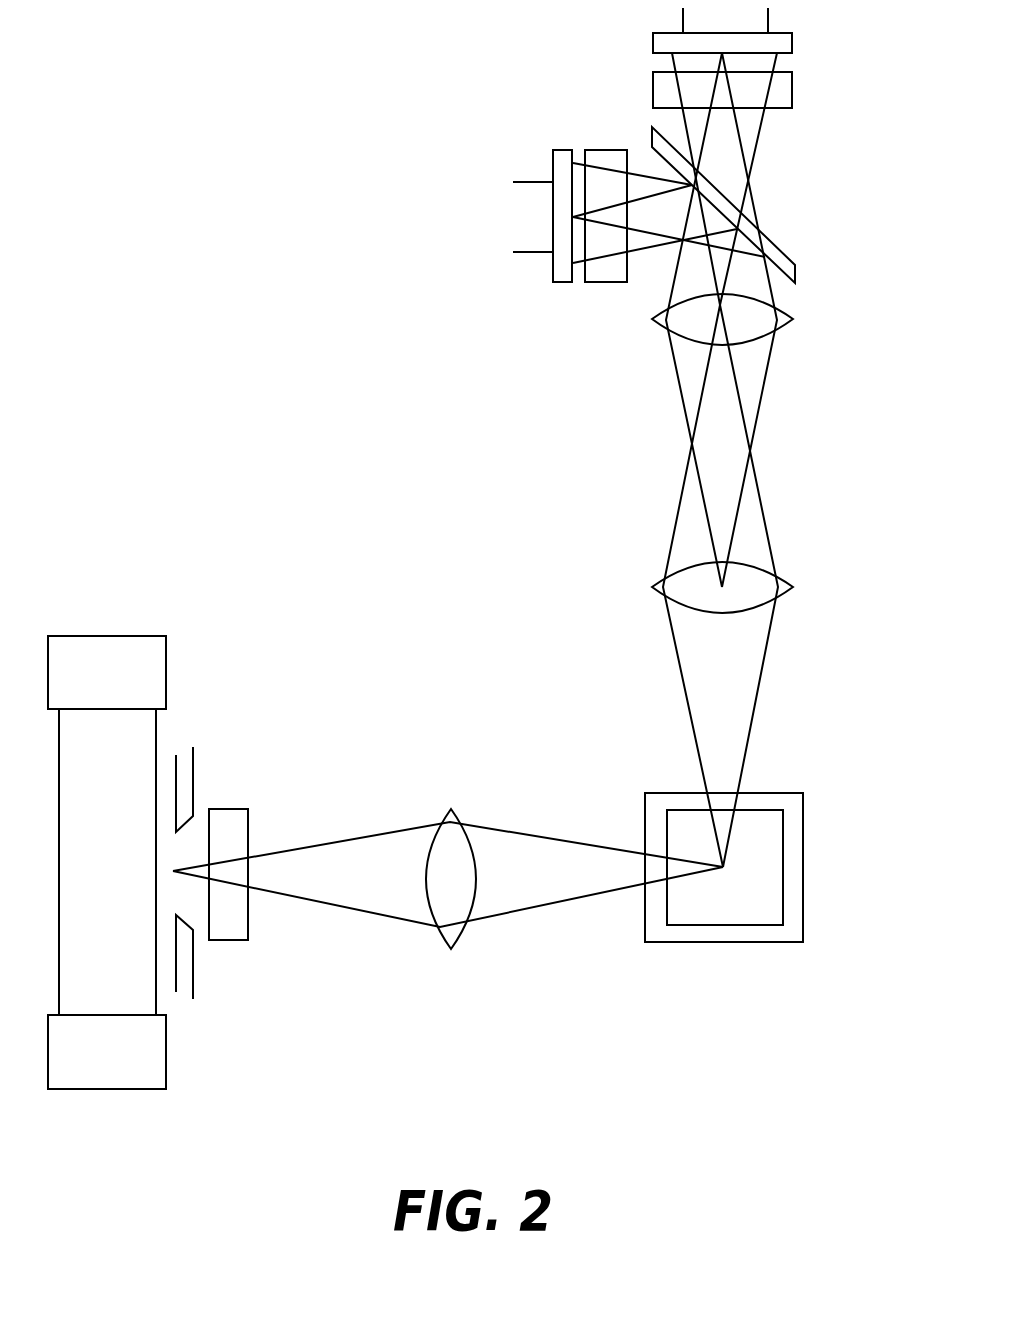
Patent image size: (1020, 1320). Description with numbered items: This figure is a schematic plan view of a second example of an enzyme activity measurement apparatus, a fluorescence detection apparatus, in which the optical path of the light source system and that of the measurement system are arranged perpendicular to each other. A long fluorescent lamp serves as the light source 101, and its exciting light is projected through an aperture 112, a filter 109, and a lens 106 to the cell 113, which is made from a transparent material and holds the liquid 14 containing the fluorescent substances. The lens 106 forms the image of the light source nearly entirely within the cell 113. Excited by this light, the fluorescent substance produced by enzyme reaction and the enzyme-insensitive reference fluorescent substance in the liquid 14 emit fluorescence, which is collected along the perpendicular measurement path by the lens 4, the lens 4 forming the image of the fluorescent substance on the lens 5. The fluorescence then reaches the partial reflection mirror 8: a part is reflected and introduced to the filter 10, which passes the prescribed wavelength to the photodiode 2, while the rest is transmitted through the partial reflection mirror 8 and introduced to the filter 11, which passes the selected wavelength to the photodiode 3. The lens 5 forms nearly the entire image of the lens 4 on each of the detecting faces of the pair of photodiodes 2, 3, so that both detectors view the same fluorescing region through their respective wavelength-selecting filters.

The photodiode 2 is at (553, 157).
The photodiode 3 is at (792, 37).
The lens 4 is at (793, 585).
The lens 5 is at (793, 317).
The partial reflection mirror 8 is at (795, 272).
The filter 10 is at (602, 282).
The filter 11 is at (792, 86).
The liquid containing the fluorescent substances 14 is at (788, 845).
The light source 101 is at (156, 728).
The lens 106 is at (443, 952).
The filter 109 is at (222, 809).
The aperture 112 is at (193, 963).
The cell 113 is at (727, 942).